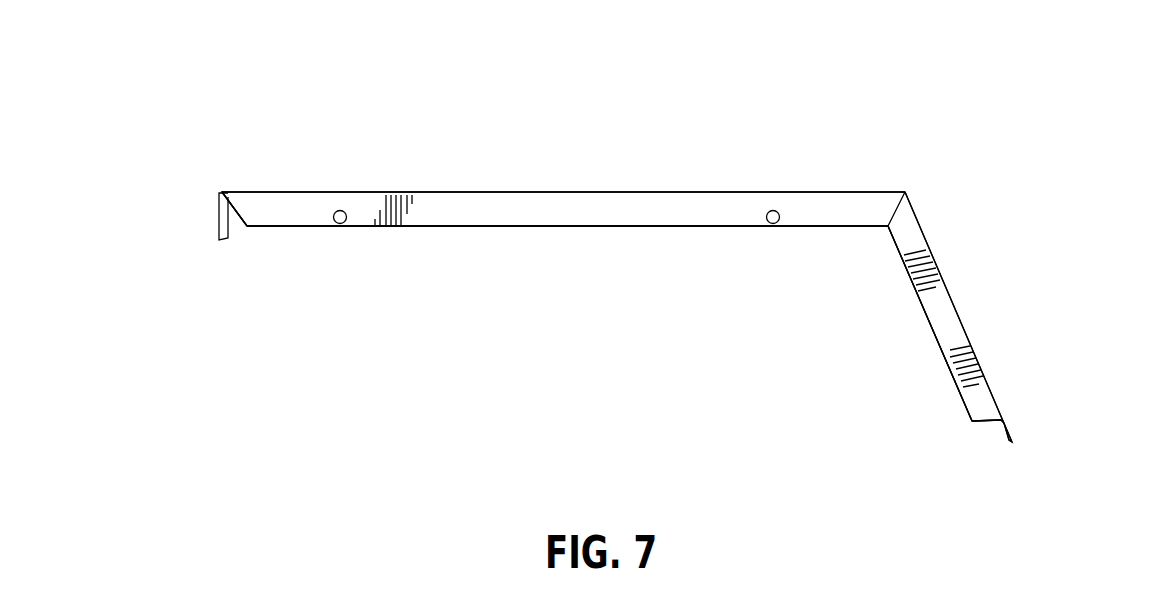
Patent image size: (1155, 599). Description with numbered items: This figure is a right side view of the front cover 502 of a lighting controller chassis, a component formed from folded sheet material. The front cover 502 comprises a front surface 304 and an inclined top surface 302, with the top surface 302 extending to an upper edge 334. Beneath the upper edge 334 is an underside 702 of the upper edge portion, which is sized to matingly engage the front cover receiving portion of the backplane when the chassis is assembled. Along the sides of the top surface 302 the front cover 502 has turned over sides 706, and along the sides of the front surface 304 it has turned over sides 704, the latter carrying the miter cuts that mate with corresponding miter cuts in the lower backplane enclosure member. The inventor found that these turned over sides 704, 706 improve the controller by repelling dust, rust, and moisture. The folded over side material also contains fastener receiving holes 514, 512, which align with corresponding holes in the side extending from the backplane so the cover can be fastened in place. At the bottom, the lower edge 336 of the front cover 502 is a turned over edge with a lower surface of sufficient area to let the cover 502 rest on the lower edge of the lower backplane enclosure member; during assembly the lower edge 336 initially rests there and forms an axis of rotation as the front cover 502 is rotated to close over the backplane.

The front cover 502 is at (845, 108).
The front surface 304 is at (576, 191).
The top surface 302 is at (945, 283).
The lower edge 336 is at (218, 215).
The upper edge 334 is at (1013, 442).
The fastener receiving hole 512 is at (339, 224).
The fastener receiving hole 514 is at (772, 224).
The turned over sides 704 is at (455, 210).
The turned over sides 706 is at (942, 318).
The underside 702 is at (1005, 433).